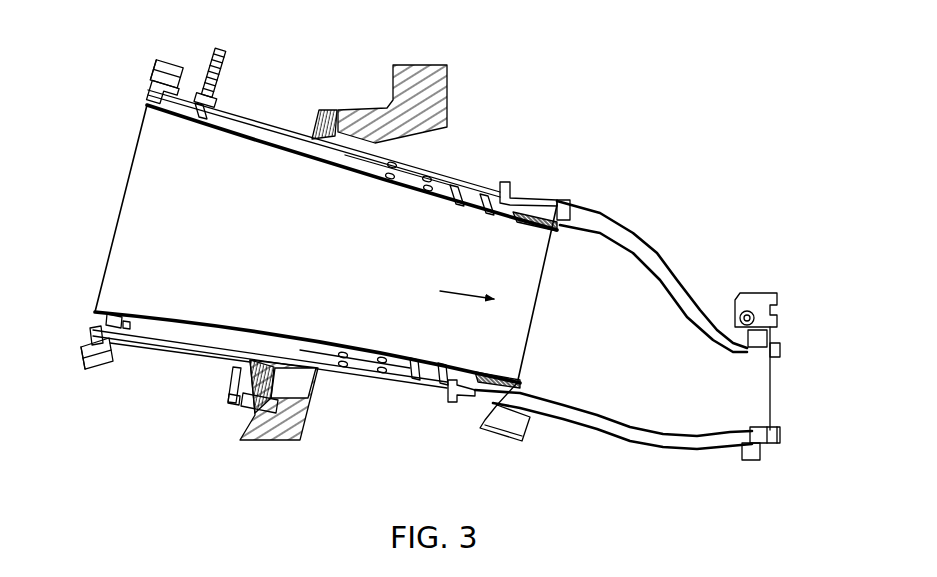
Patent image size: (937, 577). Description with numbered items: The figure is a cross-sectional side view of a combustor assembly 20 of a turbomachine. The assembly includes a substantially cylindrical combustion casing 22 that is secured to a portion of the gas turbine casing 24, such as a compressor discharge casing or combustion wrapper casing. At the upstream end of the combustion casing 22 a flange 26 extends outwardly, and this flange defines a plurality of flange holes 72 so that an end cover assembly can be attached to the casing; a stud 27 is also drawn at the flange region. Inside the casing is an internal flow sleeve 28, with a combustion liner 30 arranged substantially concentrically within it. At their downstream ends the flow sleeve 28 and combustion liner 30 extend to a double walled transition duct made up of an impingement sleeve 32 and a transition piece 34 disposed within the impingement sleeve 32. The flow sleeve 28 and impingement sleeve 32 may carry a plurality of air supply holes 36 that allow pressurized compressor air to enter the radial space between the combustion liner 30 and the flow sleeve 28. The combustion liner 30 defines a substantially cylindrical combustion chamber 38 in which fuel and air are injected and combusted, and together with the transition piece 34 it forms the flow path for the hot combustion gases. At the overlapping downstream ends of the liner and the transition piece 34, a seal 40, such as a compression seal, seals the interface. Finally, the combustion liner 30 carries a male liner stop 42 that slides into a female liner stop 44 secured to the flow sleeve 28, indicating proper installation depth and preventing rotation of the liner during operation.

The combustor assembly 20 is at (607, 130).
The combustion casing 22 is at (236, 102).
The gas turbine casing 24 is at (450, 85).
The flange 26 is at (165, 62).
The bolt / stud 27 is at (194, 84).
The flow sleeve 28 is at (413, 157).
The combustion liner 30 is at (272, 136).
The impingement sleeve 32 is at (603, 440).
The transition piece 34 is at (652, 442).
The air supply holes 36 is at (433, 190).
The combustion chamber 38 is at (254, 250).
The seal 40 is at (533, 196).
The male liner stop 42 is at (110, 322).
The female liner stop 44 is at (140, 325).
The flange holes 72 is at (158, 67).